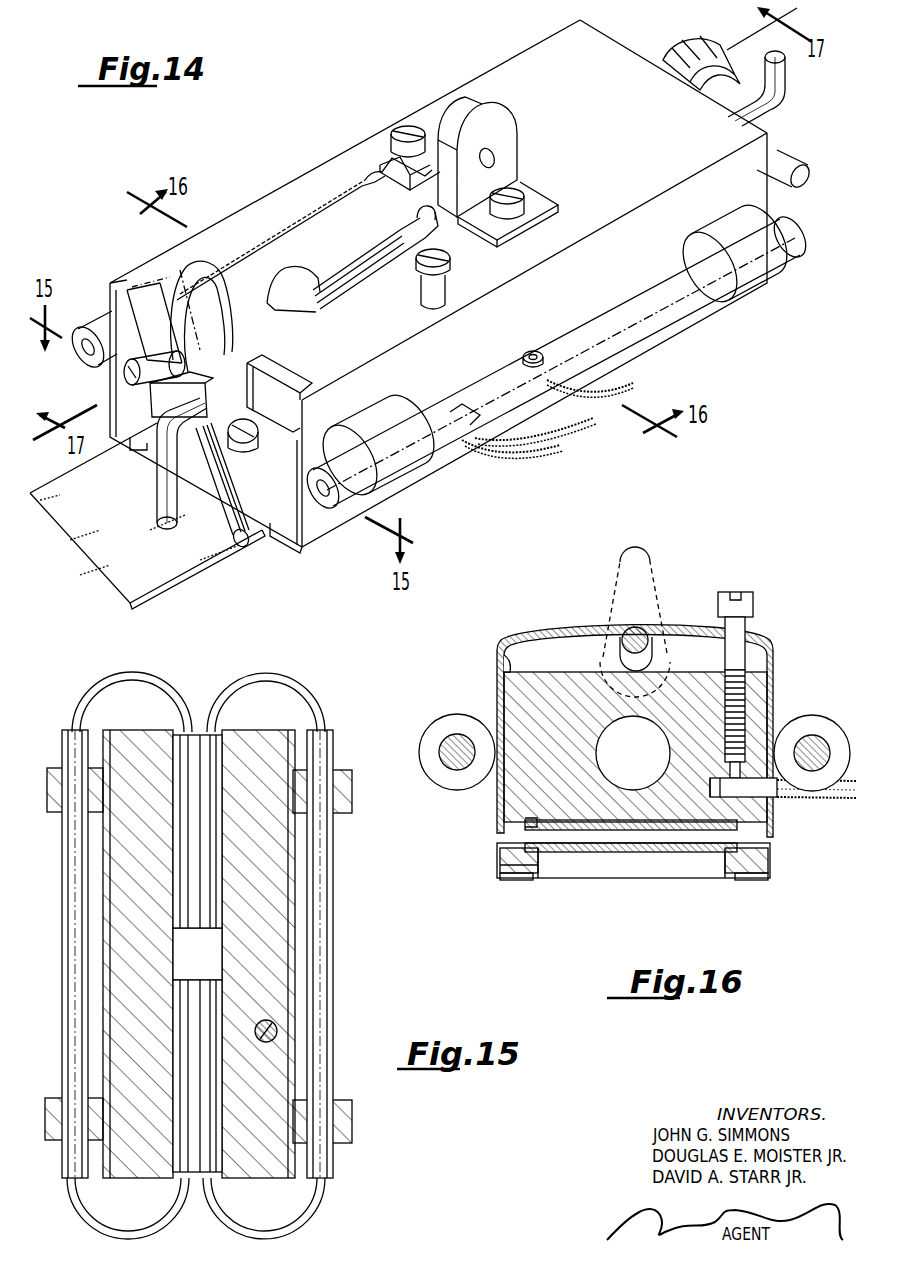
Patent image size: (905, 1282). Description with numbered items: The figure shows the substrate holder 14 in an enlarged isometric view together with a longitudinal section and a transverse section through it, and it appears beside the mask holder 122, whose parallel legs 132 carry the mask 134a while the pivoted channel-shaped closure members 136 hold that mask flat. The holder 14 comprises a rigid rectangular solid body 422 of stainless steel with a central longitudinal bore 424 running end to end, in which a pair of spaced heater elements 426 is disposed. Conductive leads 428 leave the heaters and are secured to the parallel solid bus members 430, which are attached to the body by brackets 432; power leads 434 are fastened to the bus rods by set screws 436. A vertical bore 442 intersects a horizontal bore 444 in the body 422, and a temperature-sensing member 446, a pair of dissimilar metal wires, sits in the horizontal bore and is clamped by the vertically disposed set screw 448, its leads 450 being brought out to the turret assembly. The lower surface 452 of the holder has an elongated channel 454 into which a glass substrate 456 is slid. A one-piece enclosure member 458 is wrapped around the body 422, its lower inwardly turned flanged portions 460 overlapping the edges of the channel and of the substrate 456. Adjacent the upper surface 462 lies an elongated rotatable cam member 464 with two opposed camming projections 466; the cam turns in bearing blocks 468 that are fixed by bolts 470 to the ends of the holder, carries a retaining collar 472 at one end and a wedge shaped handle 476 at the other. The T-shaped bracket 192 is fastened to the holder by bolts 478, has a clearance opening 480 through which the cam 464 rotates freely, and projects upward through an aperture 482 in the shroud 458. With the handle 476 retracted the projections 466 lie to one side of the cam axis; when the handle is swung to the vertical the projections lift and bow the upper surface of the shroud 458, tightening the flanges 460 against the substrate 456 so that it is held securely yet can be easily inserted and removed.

In FIG. 14, the substrate holder 14 is at (468, 78).
In FIG. 16, the substrate mask holder 122 is at (700, 878).
In FIG. 16, the parallel legs of holder 132 is at (535, 878).
In FIG. 16, the mask 134a is at (650, 860).
In FIG. 16, the closure member 136 is at (512, 881).
In FIG. 14, the hanger pivot bracket 192 is at (511, 137).
In FIG. 14, the body 422 is at (470, 455).
In FIG. 16, the body 422 is at (515, 700).
In FIG. 14, the central longitudinal bore 424 is at (180, 402).
In FIG. 15, the central longitudinal bore 424 is at (213, 962).
In FIG. 16, the central longitudinal bore 424 is at (633, 753).
In FIG. 15, the heater element 426 is at (222, 895).
In FIG. 14, the conductive lead 428 is at (790, 150).
In FIG. 15, the conductive lead 428 is at (172, 700).
In FIG. 14, the bus member 430 is at (90, 325).
In FIG. 15, the bus member 430 is at (68, 735).
In FIG. 16, the bus member 430 is at (450, 768).
In FIG. 14, the bracket 432 is at (405, 472).
In FIG. 15, the bracket 432 is at (48, 812).
In FIG. 16, the bracket 432 is at (444, 728).
In FIG. 14, the power lead 434 is at (620, 387).
In FIG. 14, the set screw 436 is at (533, 350).
In FIG. 15, the vertical bore 442 is at (272, 1022).
In FIG. 16, the vertical bore 442 is at (748, 685).
In FIG. 16, the horizontal bore 444 is at (758, 772).
In FIG. 16, the temperature-sensing member 446 is at (772, 798).
In FIG. 14, the set screw 448 is at (425, 303).
In FIG. 15, the set screw 448 is at (275, 1040).
In FIG. 16, the set screw 448 is at (750, 612).
In FIG. 14, the temperature senser leads 450 is at (560, 432).
In FIG. 16, the temperature senser leads 450 is at (845, 800).
In FIG. 16, the lower surface 452 is at (527, 822).
In FIG. 16, the channel 454 is at (500, 866).
In FIG. 14, the substrate 456 is at (110, 558).
In FIG. 16, the substrate 456 is at (598, 850).
In FIG. 14, the enclosure member 458 is at (661, 150).
In FIG. 16, the enclosure member 458 is at (533, 636).
In FIG. 14, the inwardly turned flanged portion 460 is at (133, 445).
In FIG. 16, the inwardly turned flanged portion 460 is at (510, 848).
In FIG. 14, the upper surface 462 is at (287, 247).
In FIG. 16, the upper surface 462 is at (503, 656).
In FIG. 14, the cam member 464 is at (348, 267).
In FIG. 16, the cam member 464 is at (627, 632).
In FIG. 14, the camming projection 466 is at (280, 285).
In FIG. 16, the camming projection 466 is at (651, 642).
In FIG. 14, the bearing block 468 is at (293, 436).
In FIG. 14, the bolt 470 is at (125, 367).
In FIG. 14, the retaining collar 472 is at (690, 48).
In FIG. 14, the wedge shaped handle 476 is at (148, 285).
In FIG. 16, the wedge shaped handle 476 is at (655, 560).
In FIG. 14, the bolt 478 is at (397, 140).
In FIG. 14, the clearance opening 480 is at (415, 210).
In FIG. 14, the aperture 482 is at (490, 250).